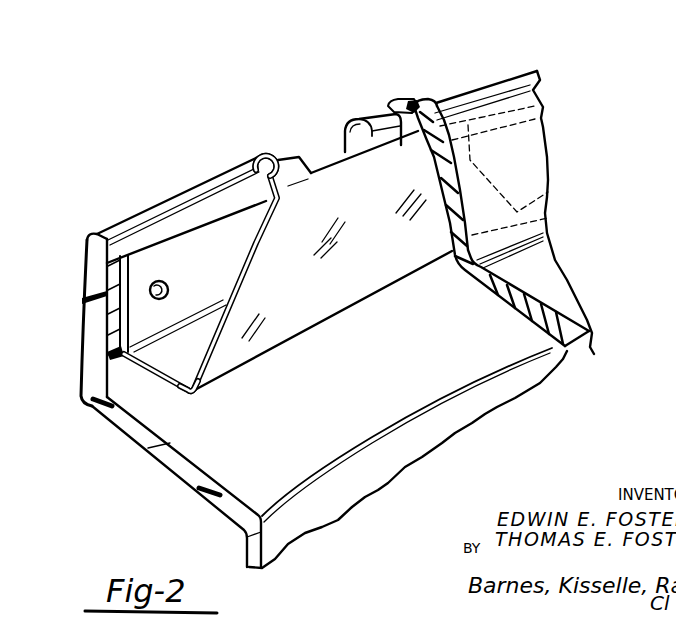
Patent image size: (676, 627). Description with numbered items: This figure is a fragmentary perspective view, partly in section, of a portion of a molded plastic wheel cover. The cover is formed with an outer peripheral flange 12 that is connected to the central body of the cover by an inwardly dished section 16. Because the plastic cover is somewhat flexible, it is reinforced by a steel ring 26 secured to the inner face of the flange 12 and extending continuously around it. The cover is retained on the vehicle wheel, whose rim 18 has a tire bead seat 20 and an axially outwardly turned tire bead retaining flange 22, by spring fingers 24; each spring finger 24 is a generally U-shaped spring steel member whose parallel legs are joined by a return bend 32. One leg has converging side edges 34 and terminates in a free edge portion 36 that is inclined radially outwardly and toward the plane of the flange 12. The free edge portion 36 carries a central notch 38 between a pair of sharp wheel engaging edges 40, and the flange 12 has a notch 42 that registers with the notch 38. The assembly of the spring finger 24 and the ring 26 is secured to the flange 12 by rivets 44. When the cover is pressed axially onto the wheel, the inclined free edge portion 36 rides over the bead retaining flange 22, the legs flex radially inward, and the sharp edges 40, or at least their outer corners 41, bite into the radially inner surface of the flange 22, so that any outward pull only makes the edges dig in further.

The outer peripheral flange 12 is at (171, 201).
The inwardly dished section 16 is at (248, 548).
The rim 18 is at (558, 197).
The tire bead seat 20 is at (563, 293).
The tire bead retaining flange 22 is at (540, 99).
The spring finger 24 is at (362, 279).
The steel ring 26 is at (84, 277).
The return bend 32 is at (174, 377).
The converging side edges 34 is at (252, 270).
The free edge portion 36 is at (348, 163).
The central notch 38 is at (357, 117).
The wheel engaging edge 40 is at (275, 162).
The outer corner 41 is at (258, 156).
The notch 42 is at (342, 128).
The rivet 44 is at (168, 289).